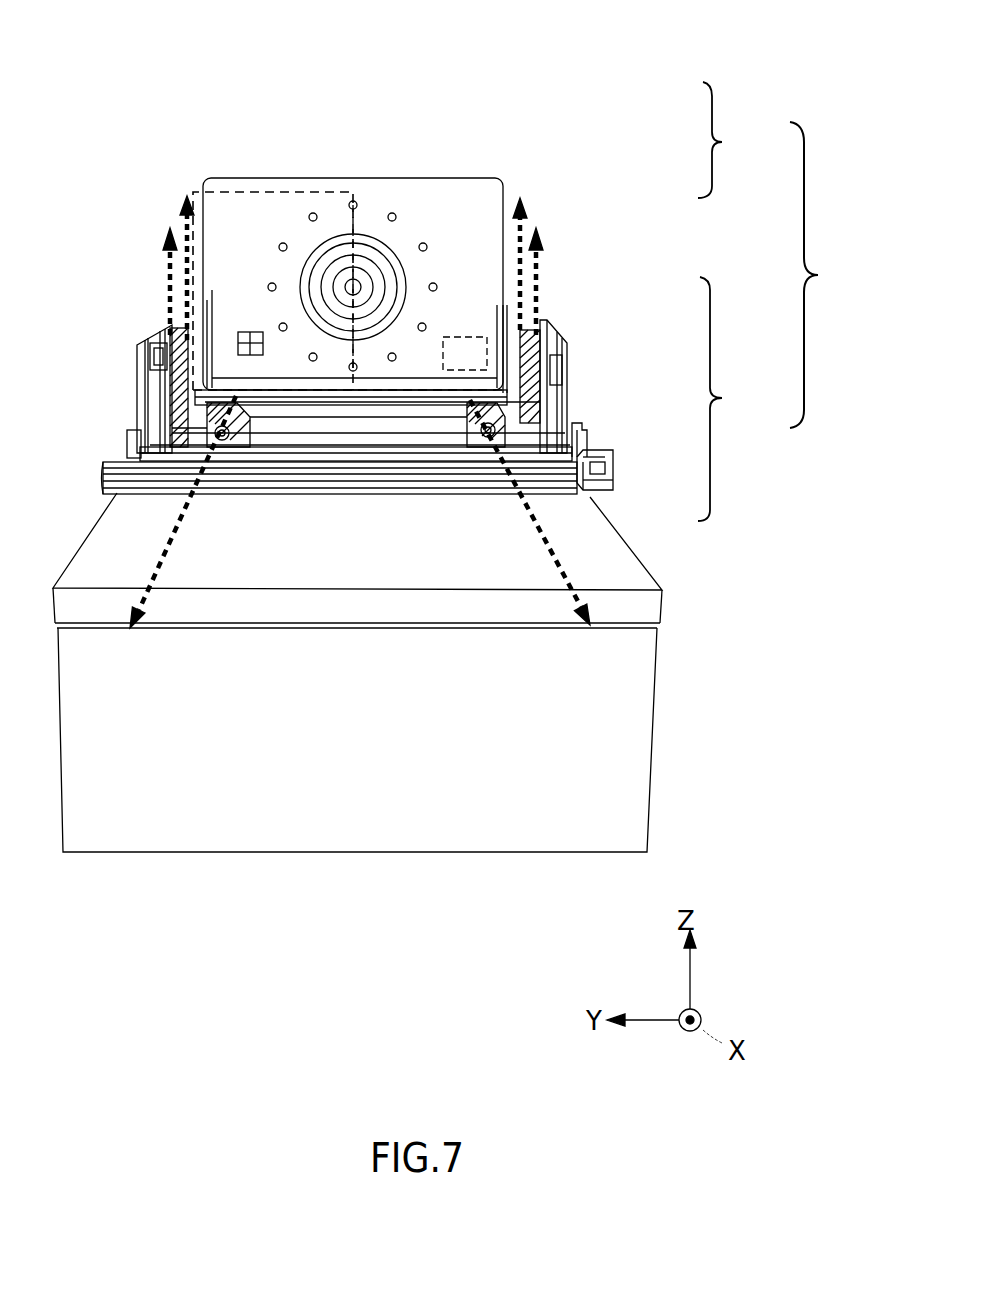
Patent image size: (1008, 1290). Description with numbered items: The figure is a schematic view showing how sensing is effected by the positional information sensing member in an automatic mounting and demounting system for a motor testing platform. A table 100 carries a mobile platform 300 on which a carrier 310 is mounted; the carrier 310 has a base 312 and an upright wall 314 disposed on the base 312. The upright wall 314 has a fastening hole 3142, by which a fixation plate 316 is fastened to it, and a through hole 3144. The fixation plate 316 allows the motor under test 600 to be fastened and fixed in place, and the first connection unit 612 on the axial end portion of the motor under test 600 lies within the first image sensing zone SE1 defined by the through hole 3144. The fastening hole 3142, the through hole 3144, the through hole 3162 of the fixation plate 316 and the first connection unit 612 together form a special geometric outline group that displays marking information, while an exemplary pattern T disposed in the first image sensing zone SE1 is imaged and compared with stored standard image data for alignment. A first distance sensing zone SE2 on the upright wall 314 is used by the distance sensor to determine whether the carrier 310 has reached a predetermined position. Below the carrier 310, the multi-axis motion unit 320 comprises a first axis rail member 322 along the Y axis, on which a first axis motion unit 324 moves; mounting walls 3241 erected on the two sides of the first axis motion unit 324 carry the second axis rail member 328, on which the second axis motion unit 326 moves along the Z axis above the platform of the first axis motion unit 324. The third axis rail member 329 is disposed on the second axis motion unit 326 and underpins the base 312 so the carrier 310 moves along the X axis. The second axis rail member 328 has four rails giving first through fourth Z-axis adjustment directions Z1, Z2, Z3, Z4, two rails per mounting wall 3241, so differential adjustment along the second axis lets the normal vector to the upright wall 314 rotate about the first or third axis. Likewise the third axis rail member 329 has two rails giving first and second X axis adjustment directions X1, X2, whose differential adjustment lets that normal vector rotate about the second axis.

The table 100 is at (448, 830).
The mobile platform 300 is at (833, 275).
The carrier 310 is at (740, 140).
The base 312 is at (508, 320).
The upright wall 314 is at (505, 195).
The fixation plate 316 is at (400, 270).
The fastening hole 3142 is at (281, 243).
The through hole 3144 is at (330, 262).
The through hole of the fixation plate 3162 is at (385, 280).
The multi-axis motion unit 320 is at (740, 399).
The first axis rail member 322 is at (595, 455).
The first axis motion unit 324 is at (578, 427).
The second axis motion unit 326 is at (540, 408).
The second axis rail member 328 is at (533, 330).
The third axis rail member 329 is at (567, 387).
The mounting wall 3241 is at (142, 343).
The motor under test 600 is at (318, 245).
The first connection unit 612 is at (357, 280).
The exemplary pattern T is at (232, 340).
The first image sensing zone SE1 is at (200, 190).
The first distance sensing zone SE2 is at (465, 337).
The first Z-axis adjustment direction Z1 is at (155, 277).
The second Z-axis adjustment direction Z2 is at (176, 255).
The third Z-axis adjustment direction Z3 is at (554, 275).
The fourth Z-axis adjustment direction Z4 is at (537, 250).
The first X axis adjustment direction X1 is at (182, 530).
The second X axis adjustment direction X2 is at (543, 531).